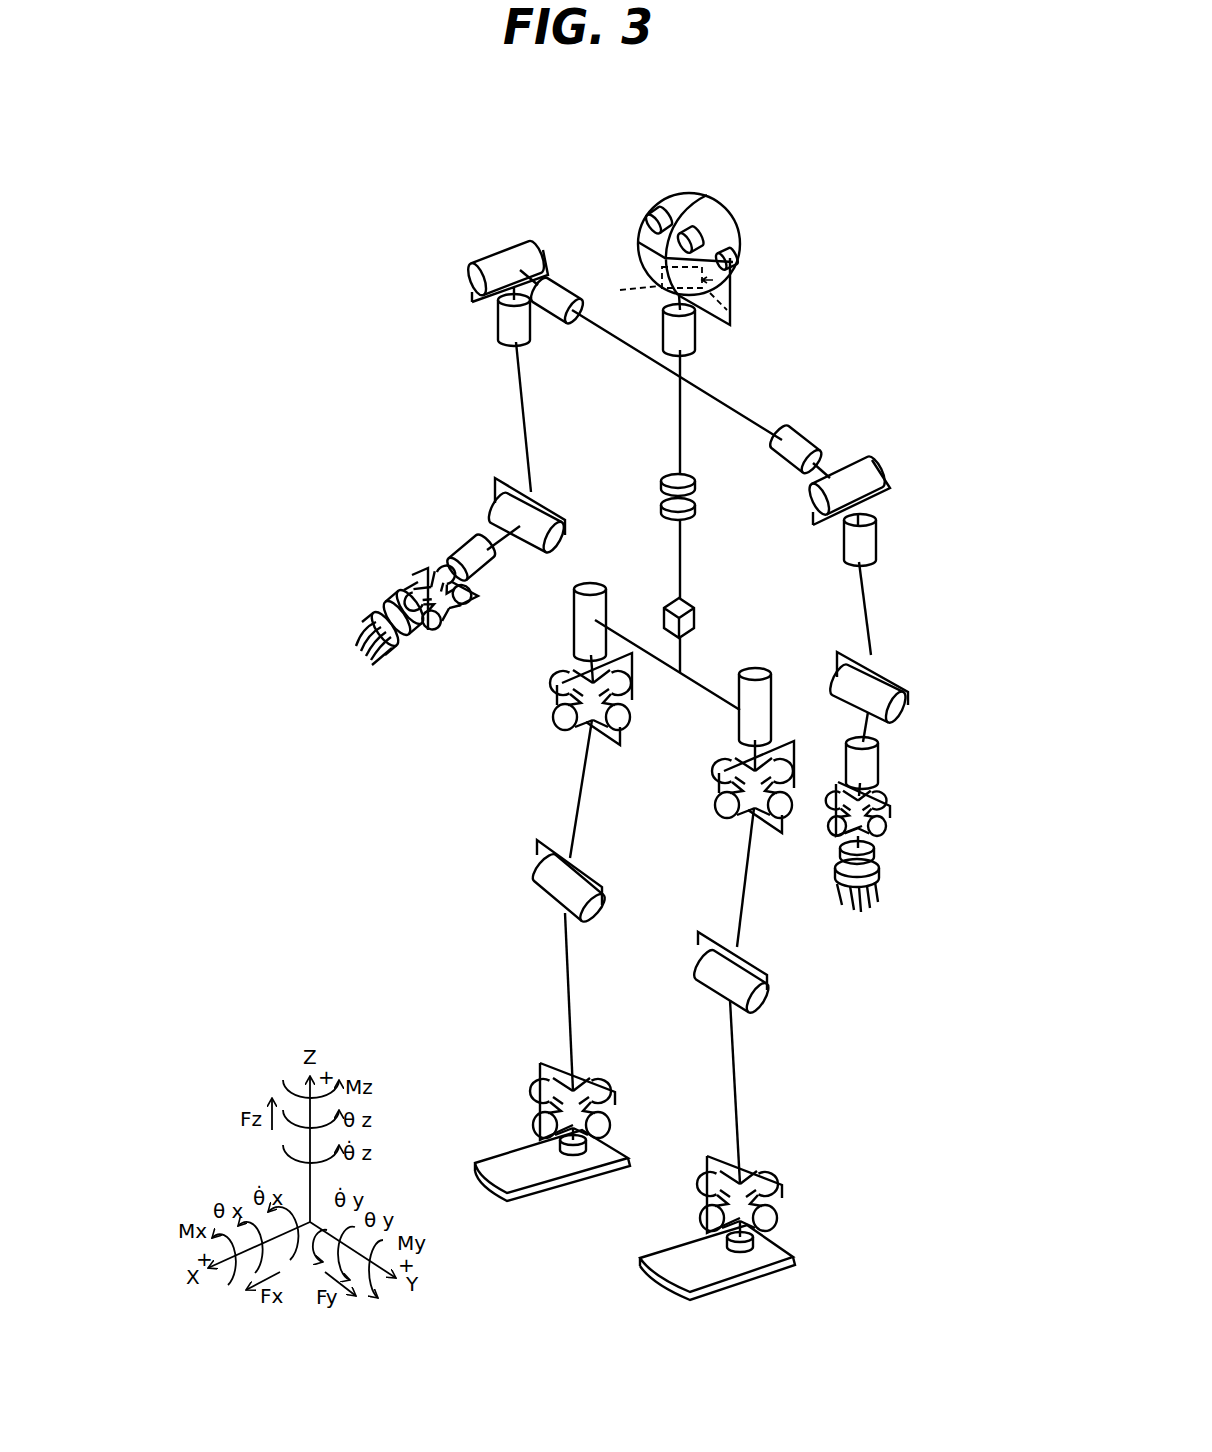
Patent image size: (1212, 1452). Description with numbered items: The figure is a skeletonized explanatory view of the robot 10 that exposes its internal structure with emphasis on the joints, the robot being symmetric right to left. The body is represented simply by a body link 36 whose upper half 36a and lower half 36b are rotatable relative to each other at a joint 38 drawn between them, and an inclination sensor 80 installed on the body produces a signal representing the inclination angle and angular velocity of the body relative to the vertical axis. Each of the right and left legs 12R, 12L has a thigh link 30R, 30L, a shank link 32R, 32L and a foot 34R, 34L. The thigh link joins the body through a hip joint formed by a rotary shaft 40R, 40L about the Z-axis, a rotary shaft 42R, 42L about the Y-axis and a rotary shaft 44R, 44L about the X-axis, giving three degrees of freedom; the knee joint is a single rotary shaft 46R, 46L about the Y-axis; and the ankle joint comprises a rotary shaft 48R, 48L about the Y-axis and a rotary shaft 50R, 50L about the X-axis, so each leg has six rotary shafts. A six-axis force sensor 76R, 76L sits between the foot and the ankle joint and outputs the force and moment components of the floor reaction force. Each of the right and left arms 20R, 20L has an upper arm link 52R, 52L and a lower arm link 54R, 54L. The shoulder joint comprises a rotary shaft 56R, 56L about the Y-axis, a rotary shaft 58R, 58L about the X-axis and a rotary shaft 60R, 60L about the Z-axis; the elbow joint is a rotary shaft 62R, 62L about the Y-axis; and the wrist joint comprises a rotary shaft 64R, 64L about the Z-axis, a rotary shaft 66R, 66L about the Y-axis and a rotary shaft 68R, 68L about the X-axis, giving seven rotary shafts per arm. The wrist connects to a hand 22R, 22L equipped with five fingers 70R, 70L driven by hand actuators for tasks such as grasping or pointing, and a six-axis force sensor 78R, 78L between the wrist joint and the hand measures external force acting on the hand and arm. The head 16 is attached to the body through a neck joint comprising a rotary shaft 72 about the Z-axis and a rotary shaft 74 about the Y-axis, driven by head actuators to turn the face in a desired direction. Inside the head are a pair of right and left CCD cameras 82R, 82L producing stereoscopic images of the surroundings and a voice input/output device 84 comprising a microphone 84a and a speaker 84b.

The robot 10 is at (820, 368).
The right leg 12R is at (505, 910).
The left leg 12L is at (798, 1024).
The head 16 is at (664, 193).
The right arm 20R is at (493, 438).
The left arm 20L is at (898, 642).
The right hand 22R is at (408, 642).
The left hand 22L is at (880, 883).
The right thigh link 30R is at (579, 822).
The left thigh link 30L is at (742, 900).
The right shank link 32R is at (565, 997).
The left shank link 32L is at (734, 1075).
The right foot 34R is at (532, 1185).
The left foot 34L is at (712, 1280).
The body link 36 is at (688, 548).
The upper half of body link 36a is at (682, 452).
The lower half of body link 36b is at (682, 590).
The body rotation joint 38 is at (700, 500).
The right hip rotary shaft (Z-axis) 40R is at (600, 600).
The left hip rotary shaft (Z-axis) 40L is at (765, 690).
The right hip rotary shaft (Y-axis) 42R is at (566, 675).
The left hip rotary shaft (Y-axis) 42L is at (724, 768).
The right hip rotary shaft (X-axis) 44R is at (566, 730).
The left hip rotary shaft (X-axis) 44L is at (728, 818).
The right knee rotary shaft 46R is at (597, 910).
The left knee rotary shaft 46L is at (760, 1000).
The right ankle rotary shaft (Y-axis) 48R is at (604, 1118).
The left ankle rotary shaft (Y-axis) 48L is at (769, 1208).
The right ankle rotary shaft (X-axis) 50R is at (594, 1082).
The left ankle rotary shaft (X-axis) 50L is at (760, 1176).
The right upper arm link 52R is at (528, 450).
The left upper arm link 52L is at (871, 598).
The right lower arm link 54R is at (508, 527).
The left lower arm link 54L is at (870, 722).
The right shoulder rotary shaft (Y-axis) 56R is at (560, 292).
The left shoulder rotary shaft (Y-axis) 56L is at (797, 445).
The right shoulder rotary shaft (X-axis) 58R is at (478, 262).
The left shoulder rotary shaft (X-axis) 58L is at (877, 468).
The right shoulder rotary shaft (Z-axis) 60R is at (498, 330).
The left shoulder rotary shaft (Z-axis) 60L is at (871, 540).
The right elbow rotary shaft 62R is at (560, 540).
The left elbow rotary shaft 62L is at (906, 706).
The right wrist rotary shaft (Z-axis) 64R is at (492, 566).
The left wrist rotary shaft (Z-axis) 64L is at (877, 765).
The right wrist rotary shaft (Y-axis) 66R is at (412, 588).
The left wrist rotary shaft (Y-axis) 66L is at (886, 826).
The right wrist rotary shaft (X-axis) 68R is at (434, 568).
The left wrist rotary shaft (X-axis) 68L is at (890, 806).
The right fingers 70R is at (348, 659).
The left fingers 70L is at (893, 908).
The neck rotary shaft (Z-axis) 72 is at (690, 340).
The neck rotary shaft (Y-axis) 74 is at (730, 253).
The right six-axis force sensor 76R is at (577, 1150).
The left six-axis force sensor 76L is at (754, 1254).
The right arm six-axis force sensor 78R is at (388, 612).
The left arm six-axis force sensor 78L is at (874, 855).
The inclination sensor 80 is at (698, 616).
The right CCD camera 82R is at (650, 222).
The left CCD camera 82L is at (699, 236).
The voice input/output device 84 is at (737, 282).
The microphone 84a is at (733, 314).
The speaker 84b is at (659, 306).